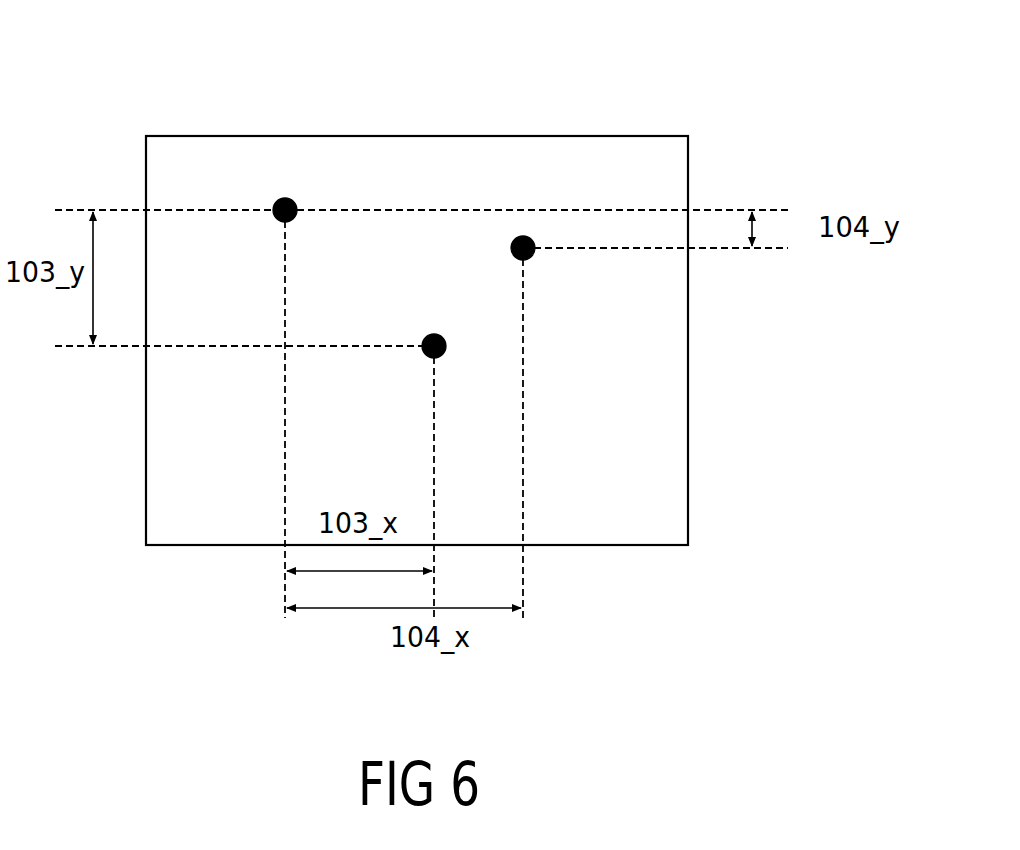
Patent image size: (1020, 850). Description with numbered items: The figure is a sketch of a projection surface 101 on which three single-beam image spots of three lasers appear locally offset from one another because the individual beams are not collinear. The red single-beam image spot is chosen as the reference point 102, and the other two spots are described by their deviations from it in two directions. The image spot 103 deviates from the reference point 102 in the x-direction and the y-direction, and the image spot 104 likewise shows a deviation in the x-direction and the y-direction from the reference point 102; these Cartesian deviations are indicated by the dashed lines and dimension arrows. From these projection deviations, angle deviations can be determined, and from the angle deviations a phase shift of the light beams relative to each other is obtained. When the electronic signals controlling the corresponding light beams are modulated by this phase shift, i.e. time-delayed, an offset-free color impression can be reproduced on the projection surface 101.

The projection surface 101 is at (663, 136).
The red reference point 102 is at (286, 198).
The image spot 103 is at (436, 336).
The image spot 104 is at (527, 238).